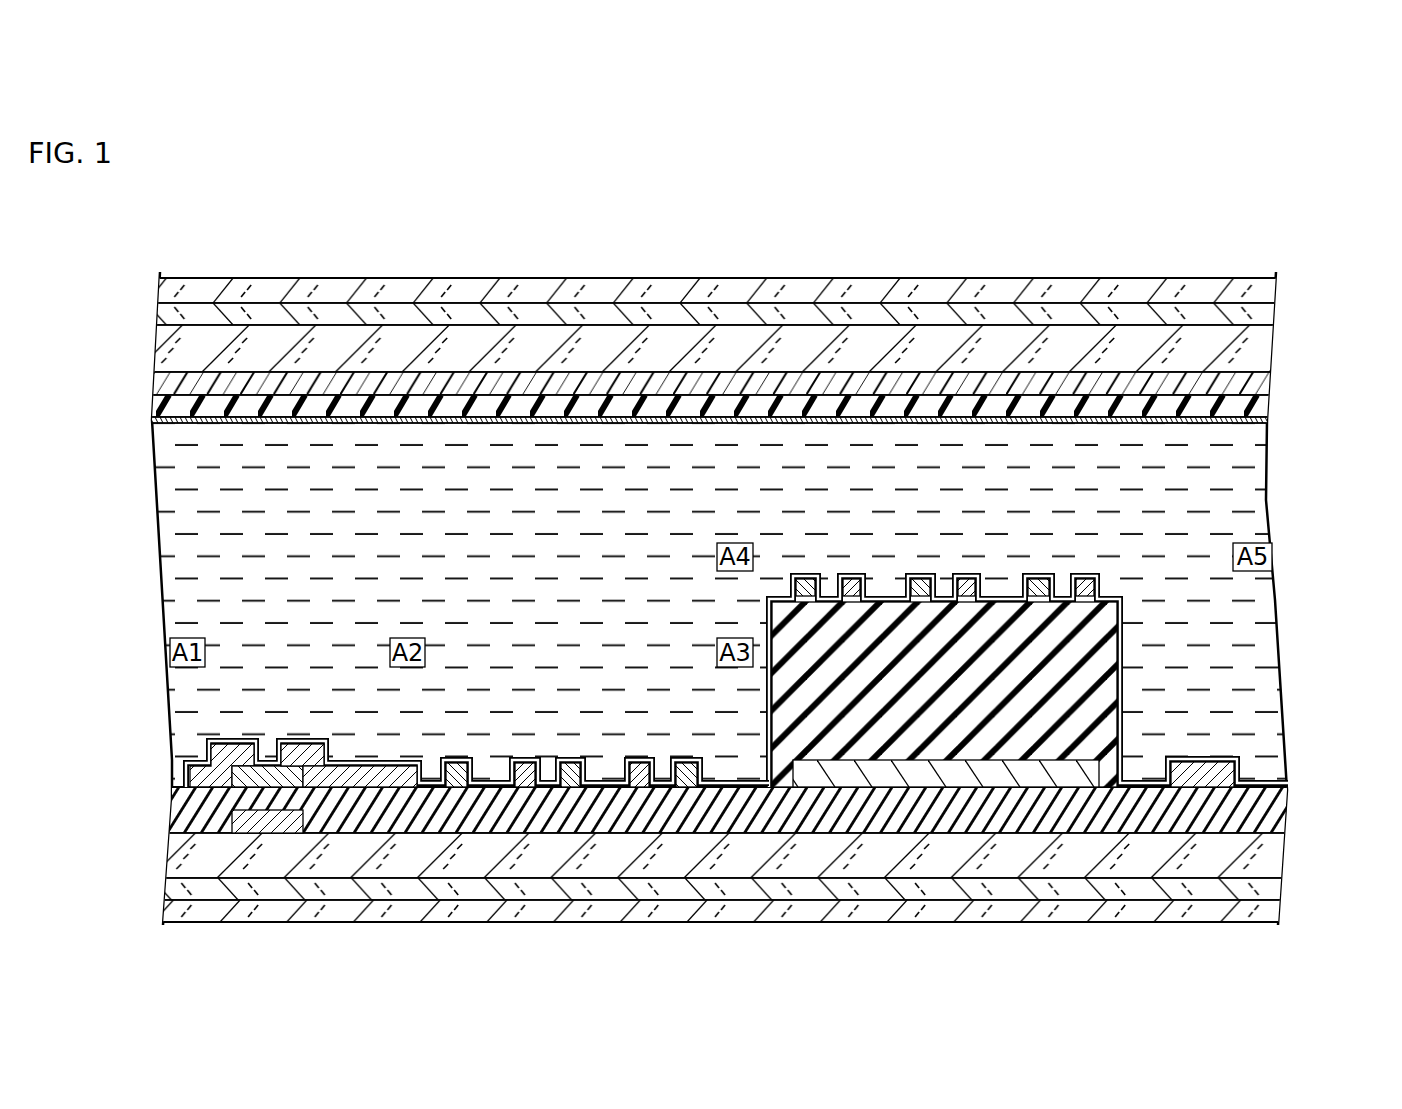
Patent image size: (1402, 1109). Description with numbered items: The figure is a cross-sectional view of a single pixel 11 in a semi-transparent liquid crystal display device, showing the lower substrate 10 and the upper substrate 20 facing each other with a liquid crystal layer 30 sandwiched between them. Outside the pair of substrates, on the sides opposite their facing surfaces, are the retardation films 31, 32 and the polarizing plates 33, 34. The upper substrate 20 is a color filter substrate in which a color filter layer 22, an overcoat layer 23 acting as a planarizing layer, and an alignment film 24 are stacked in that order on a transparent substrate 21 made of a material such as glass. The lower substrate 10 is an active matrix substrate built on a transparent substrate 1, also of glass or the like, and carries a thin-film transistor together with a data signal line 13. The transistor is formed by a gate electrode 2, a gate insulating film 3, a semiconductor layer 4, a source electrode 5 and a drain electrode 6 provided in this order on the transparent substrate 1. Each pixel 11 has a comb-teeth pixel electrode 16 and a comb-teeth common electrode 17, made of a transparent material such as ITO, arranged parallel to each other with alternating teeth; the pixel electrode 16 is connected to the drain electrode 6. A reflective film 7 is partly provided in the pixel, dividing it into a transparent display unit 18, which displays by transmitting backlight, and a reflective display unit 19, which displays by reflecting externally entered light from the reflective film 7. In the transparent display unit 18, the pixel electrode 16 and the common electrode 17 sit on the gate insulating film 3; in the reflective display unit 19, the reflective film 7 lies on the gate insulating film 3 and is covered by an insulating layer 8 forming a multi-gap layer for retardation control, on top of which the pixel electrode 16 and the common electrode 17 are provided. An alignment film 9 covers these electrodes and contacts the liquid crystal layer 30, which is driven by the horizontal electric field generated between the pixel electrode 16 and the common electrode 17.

The transparent substrate 1 is at (178, 858).
The gate electrode 2 is at (243, 822).
The gate insulating film 3 is at (178, 805).
The semiconductor layer 4 is at (252, 768).
The source electrode 5 is at (250, 768).
The drain electrode 6 is at (305, 747).
The reflective film 7 is at (1078, 762).
The insulating layer 8 is at (1123, 672).
The alignment film 9 is at (1123, 633).
The lower substrate 10 is at (1305, 785).
The pixel 11 is at (1241, 241).
The data signal line 13 is at (1237, 753).
The pixel electrode 16 is at (413, 770).
The common electrode 17 is at (456, 775).
The transparent display unit 18 is at (760, 267).
The reflective display unit 19 is at (1135, 267).
The upper substrate 20 is at (1280, 327).
The transparent substrate 21 is at (158, 343).
The color filter layer 22 is at (156, 381).
The overcoat layer 23 is at (156, 410).
The alignment film 24 is at (153, 421).
The liquid crystal layer 30 is at (1262, 508).
The retardation film 31 is at (1280, 885).
The retardation film 32 is at (1274, 308).
The polarizing plate 33 is at (1276, 910).
The polarizing plate 34 is at (1276, 282).